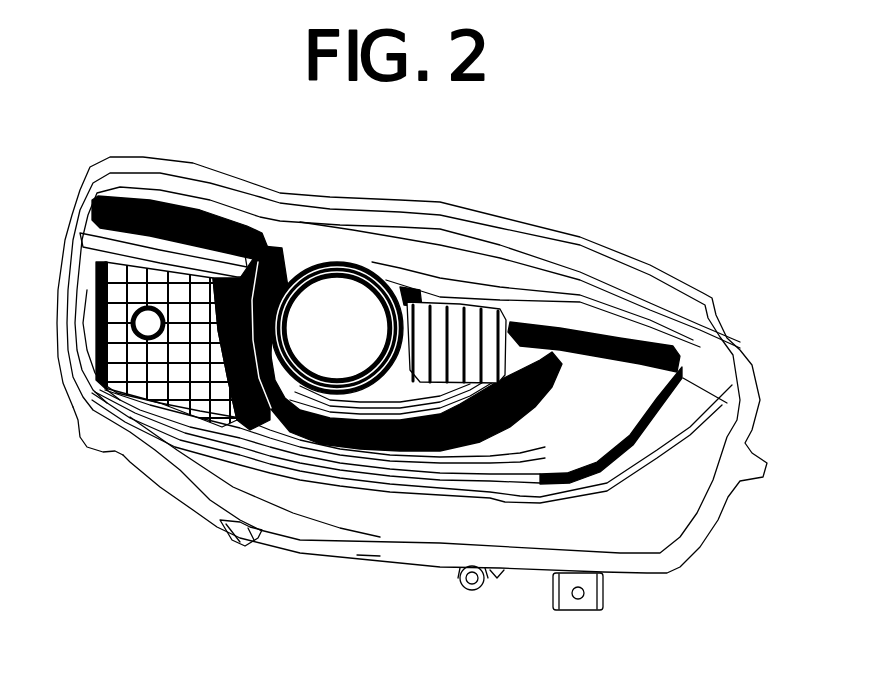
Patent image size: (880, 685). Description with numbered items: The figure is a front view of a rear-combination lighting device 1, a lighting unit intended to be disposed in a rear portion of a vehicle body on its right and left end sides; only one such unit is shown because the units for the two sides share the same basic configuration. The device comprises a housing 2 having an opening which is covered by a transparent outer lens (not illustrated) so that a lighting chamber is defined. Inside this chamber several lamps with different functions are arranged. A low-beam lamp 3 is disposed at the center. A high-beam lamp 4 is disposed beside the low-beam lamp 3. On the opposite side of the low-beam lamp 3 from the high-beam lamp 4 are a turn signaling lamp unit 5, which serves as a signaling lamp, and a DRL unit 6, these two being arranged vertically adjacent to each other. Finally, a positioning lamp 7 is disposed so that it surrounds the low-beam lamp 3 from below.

The rear-combination lighting device 1 is at (578, 222).
The housing 2 is at (665, 575).
The low-beam lamp 3 is at (330, 297).
The high-beam lamp 4 is at (97, 322).
The turn signaling lamp unit 5 is at (662, 345).
The DRL unit 6 is at (630, 360).
The positioning lamp 7 is at (310, 443).